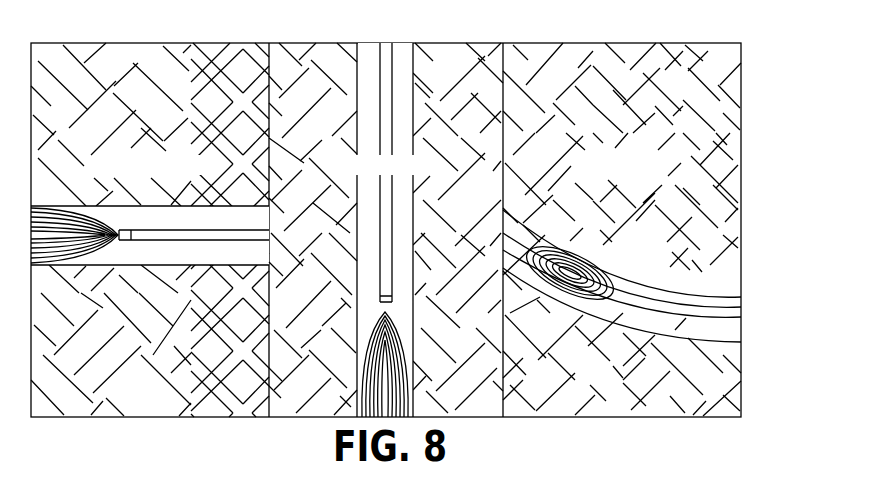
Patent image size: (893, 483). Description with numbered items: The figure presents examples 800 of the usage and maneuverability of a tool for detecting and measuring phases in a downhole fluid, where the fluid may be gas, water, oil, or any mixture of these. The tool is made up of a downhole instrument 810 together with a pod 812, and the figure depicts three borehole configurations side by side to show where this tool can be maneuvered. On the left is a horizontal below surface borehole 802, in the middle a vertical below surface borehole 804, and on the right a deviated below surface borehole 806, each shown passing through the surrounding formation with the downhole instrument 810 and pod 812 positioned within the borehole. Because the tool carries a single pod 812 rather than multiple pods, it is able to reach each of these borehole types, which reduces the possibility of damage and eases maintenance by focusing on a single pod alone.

The examples of usage and maneuverability 800 is at (756, 71).
The horizontal below surface borehole 802 is at (150, 66).
The vertical below surface borehole 804 is at (455, 71).
The deviated below surface borehole 806 is at (661, 216).
The downhole instrument 810 is at (742, 274).
The pod 812 is at (600, 267).